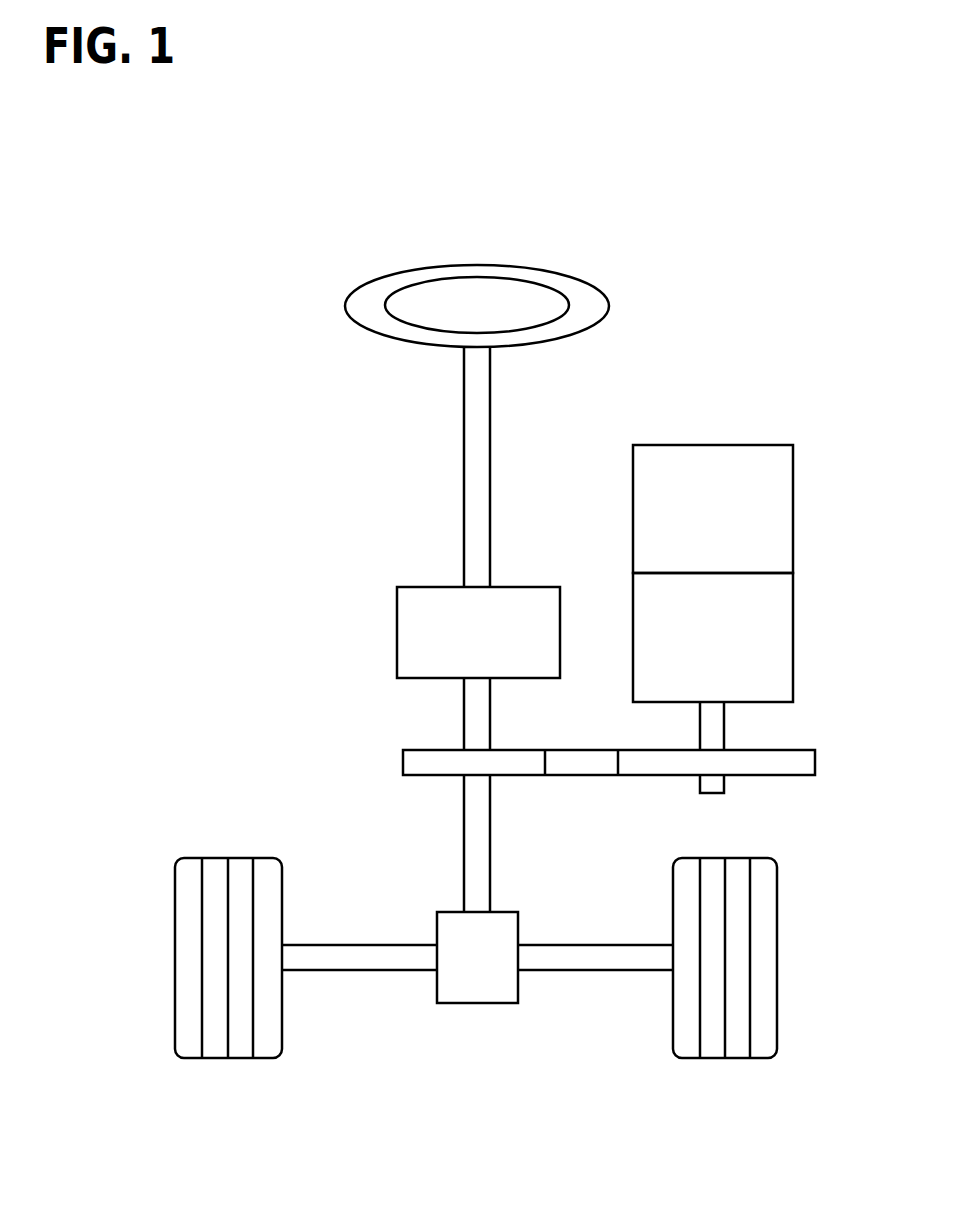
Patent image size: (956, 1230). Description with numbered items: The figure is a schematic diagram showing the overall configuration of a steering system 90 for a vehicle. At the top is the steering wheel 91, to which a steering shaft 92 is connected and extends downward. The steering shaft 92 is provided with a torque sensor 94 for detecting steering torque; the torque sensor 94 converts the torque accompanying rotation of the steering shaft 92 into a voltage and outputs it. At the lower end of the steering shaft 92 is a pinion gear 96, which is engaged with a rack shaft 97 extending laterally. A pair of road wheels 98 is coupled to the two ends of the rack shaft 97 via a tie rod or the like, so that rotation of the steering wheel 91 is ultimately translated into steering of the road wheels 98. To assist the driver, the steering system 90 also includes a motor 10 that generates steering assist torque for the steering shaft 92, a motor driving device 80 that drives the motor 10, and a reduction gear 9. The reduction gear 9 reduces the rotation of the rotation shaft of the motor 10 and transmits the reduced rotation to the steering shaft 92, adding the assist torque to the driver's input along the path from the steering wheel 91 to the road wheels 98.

The steering system 90 is at (437, 1067).
The steering wheel 91 is at (346, 305).
The steering shaft 92 is at (464, 466).
The torque sensor 94 is at (520, 587).
The pinion gear 96 is at (520, 920).
The rack shaft 97 is at (390, 971).
The road wheels 98 is at (175, 917).
The reduction gear 9 is at (817, 762).
The motor 10 is at (795, 631).
The motor driving device 80 is at (795, 510).